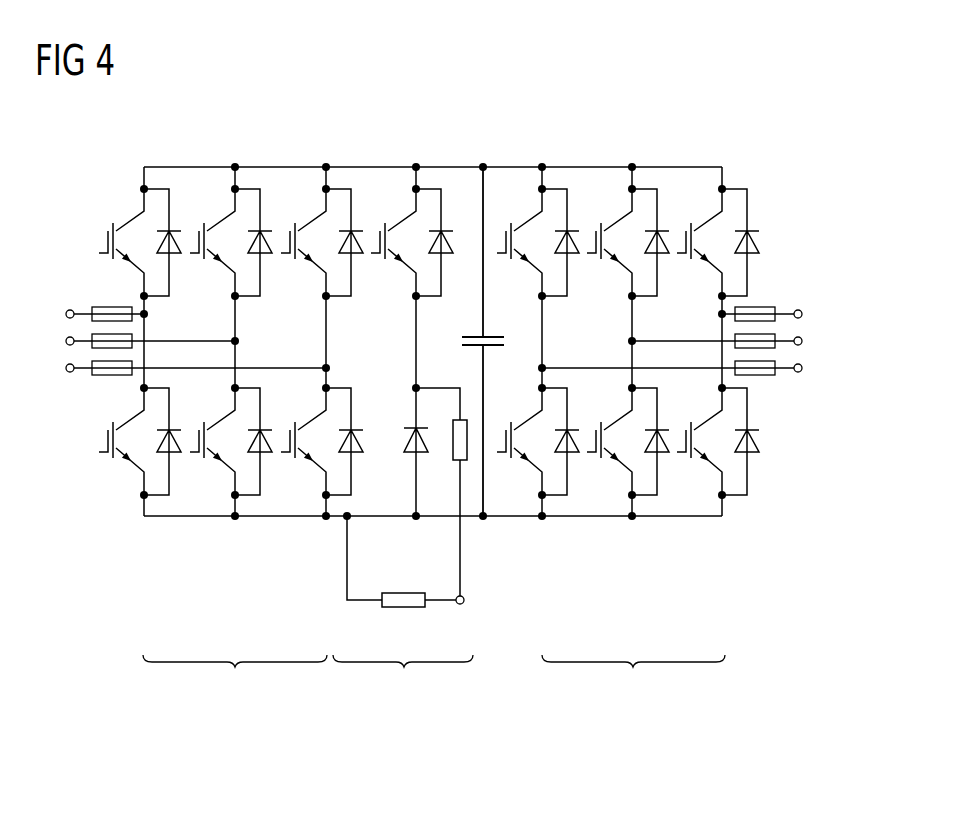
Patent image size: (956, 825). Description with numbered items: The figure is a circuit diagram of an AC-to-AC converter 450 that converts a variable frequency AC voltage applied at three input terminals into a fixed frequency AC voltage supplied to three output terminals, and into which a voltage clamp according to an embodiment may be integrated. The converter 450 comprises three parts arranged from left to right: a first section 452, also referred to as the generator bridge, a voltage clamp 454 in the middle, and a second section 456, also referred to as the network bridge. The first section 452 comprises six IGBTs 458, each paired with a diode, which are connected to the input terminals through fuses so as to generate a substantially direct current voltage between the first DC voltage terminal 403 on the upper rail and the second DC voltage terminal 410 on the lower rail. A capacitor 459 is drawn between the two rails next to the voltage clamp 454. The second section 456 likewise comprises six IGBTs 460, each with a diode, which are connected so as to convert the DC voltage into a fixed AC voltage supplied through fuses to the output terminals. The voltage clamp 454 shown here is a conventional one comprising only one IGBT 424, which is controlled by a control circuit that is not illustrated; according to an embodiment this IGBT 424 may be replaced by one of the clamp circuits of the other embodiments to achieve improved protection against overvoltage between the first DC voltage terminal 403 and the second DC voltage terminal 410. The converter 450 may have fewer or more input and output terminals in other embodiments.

The AC-to-AC converter 450 is at (704, 103).
The first section 452 is at (200, 384).
The voltage clamp 454 is at (433, 402).
The second section 456 is at (665, 384).
The IGBTs 458 is at (199, 157).
The IGBTs 460 is at (594, 157).
The IGBT 424 is at (387, 213).
The first DC voltage terminal 403 is at (416, 166).
The second DC voltage terminal 410 is at (414, 514).
The DC link capacitor 459 is at (492, 336).